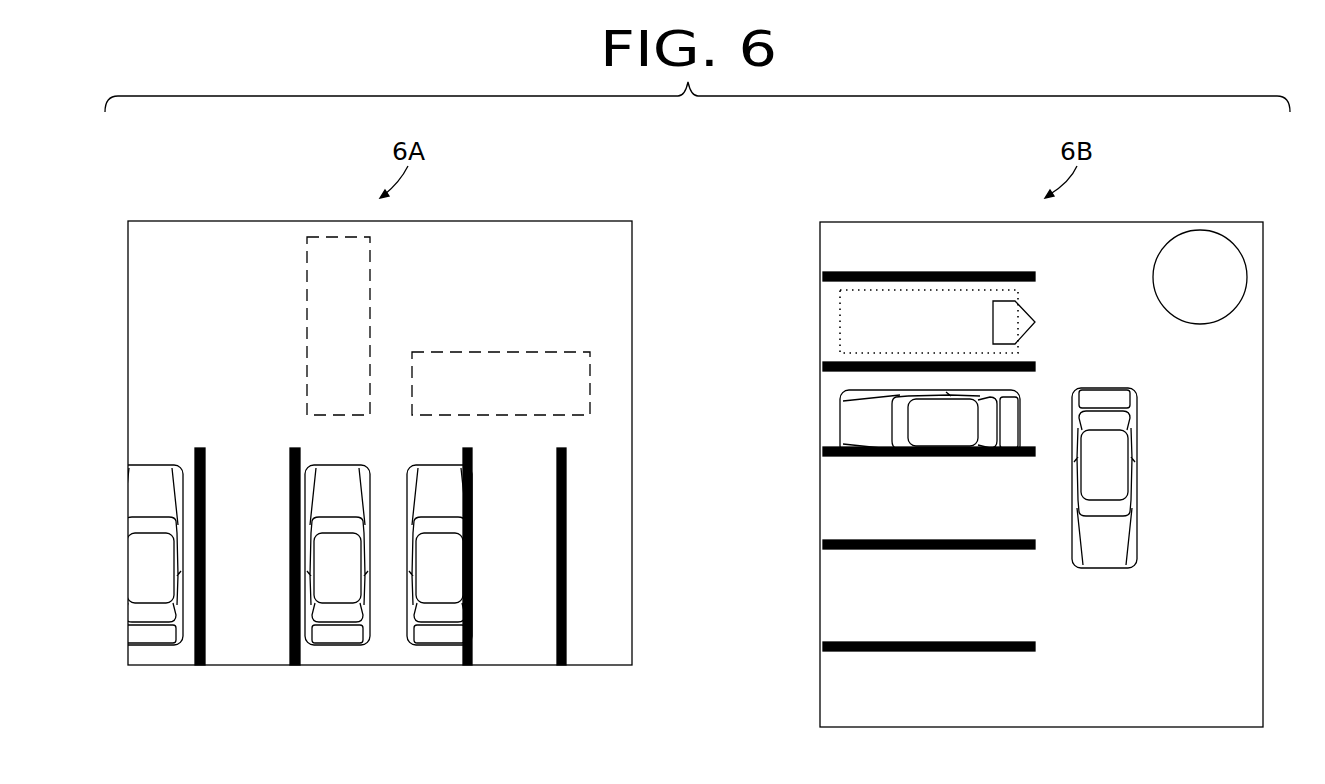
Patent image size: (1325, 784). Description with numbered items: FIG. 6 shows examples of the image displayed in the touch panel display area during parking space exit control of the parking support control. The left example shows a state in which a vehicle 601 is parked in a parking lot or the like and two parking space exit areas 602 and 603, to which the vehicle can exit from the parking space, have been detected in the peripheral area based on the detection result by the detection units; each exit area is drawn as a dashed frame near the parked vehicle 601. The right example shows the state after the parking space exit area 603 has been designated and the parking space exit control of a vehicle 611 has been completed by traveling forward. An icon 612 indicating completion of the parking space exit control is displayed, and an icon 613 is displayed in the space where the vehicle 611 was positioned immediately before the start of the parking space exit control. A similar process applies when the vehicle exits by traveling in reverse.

The vehicle 601 is at (338, 466).
The parking space exit area 602 is at (307, 318).
The parking space exit area 603 is at (502, 350).
The vehicle 611 is at (1137, 410).
The icon 612 is at (1247, 266).
The icon 613 is at (1031, 318).